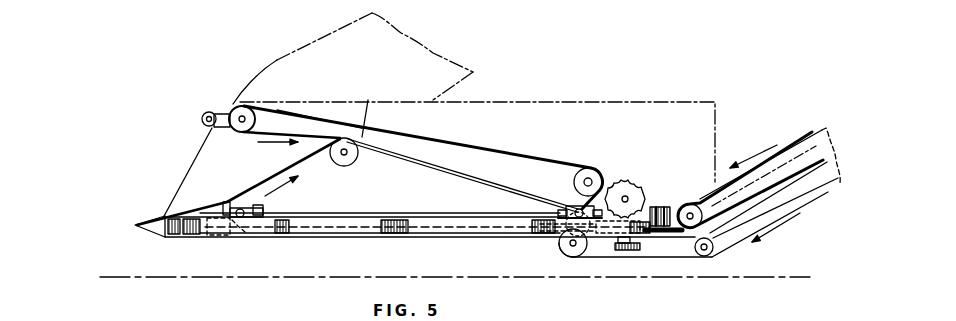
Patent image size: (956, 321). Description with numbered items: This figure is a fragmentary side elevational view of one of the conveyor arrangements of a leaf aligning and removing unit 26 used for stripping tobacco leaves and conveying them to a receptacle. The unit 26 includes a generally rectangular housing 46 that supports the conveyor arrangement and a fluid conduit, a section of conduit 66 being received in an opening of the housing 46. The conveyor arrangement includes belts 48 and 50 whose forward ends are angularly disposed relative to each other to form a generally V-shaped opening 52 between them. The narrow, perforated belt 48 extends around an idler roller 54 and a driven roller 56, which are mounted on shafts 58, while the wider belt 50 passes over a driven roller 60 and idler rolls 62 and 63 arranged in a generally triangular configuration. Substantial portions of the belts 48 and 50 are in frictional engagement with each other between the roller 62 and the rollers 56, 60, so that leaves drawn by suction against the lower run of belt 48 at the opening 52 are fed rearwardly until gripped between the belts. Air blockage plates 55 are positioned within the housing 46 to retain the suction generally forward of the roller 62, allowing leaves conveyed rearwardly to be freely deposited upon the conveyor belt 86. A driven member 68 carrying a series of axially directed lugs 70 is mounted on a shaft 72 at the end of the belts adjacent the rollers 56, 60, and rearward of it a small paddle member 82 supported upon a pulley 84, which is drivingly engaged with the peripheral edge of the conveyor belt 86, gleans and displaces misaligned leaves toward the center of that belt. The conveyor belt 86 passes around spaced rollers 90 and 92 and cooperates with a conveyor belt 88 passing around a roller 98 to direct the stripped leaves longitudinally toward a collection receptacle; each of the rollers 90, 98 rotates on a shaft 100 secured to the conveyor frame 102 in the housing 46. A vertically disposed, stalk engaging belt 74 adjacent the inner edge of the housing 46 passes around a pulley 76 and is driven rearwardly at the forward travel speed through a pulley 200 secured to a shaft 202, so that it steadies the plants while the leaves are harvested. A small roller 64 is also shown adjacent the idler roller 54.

The leaf aligning and removing unit 26 is at (176, 195).
The rectangular housing 46 is at (533, 103).
The belt 48 is at (453, 146).
The belt 50 is at (314, 156).
The V-shaped opening 52 is at (262, 157).
The idler roller 54 is at (268, 100).
The air blockage plate 55 is at (368, 121).
The driven roller 56 is at (582, 168).
The shaft 58 is at (256, 114).
The driven roller 60 is at (572, 204).
The idler roll 62 is at (354, 161).
The idler roll 63 is at (247, 203).
The guide roller 64 is at (208, 111).
The conduit section 66 is at (325, 36).
The driven member 68 is at (620, 180).
The lug 70 is at (642, 203).
The shaft 72 is at (629, 197).
The vertically disposed belt 74 is at (262, 233).
The pulley 76 is at (230, 238).
The paddle member 82 is at (655, 206).
The pulley 84 is at (662, 232).
The conveyor belt 86 is at (818, 196).
The conveyor belt 88 is at (783, 144).
The roller 90 is at (563, 254).
The roller 92 is at (700, 258).
The roller 98 is at (691, 204).
The shaft 100 is at (568, 245).
The conveyor frame 102 is at (826, 122).
The pulley 200 is at (612, 248).
The shaft 202 is at (632, 250).